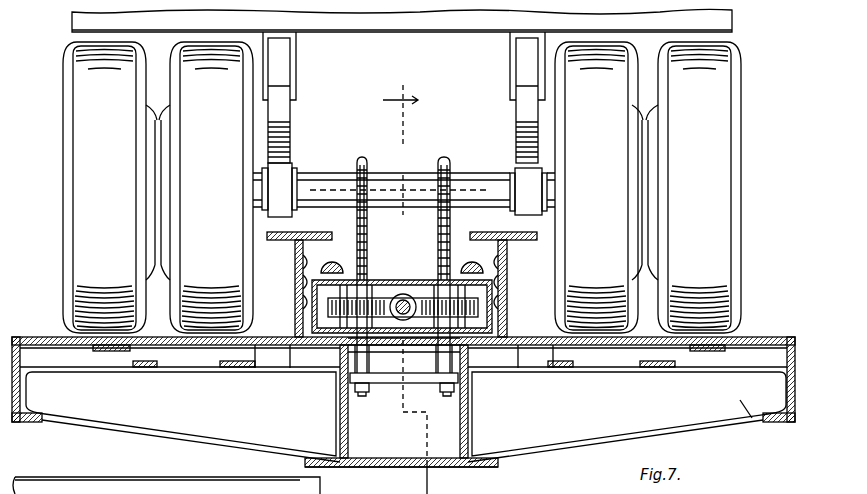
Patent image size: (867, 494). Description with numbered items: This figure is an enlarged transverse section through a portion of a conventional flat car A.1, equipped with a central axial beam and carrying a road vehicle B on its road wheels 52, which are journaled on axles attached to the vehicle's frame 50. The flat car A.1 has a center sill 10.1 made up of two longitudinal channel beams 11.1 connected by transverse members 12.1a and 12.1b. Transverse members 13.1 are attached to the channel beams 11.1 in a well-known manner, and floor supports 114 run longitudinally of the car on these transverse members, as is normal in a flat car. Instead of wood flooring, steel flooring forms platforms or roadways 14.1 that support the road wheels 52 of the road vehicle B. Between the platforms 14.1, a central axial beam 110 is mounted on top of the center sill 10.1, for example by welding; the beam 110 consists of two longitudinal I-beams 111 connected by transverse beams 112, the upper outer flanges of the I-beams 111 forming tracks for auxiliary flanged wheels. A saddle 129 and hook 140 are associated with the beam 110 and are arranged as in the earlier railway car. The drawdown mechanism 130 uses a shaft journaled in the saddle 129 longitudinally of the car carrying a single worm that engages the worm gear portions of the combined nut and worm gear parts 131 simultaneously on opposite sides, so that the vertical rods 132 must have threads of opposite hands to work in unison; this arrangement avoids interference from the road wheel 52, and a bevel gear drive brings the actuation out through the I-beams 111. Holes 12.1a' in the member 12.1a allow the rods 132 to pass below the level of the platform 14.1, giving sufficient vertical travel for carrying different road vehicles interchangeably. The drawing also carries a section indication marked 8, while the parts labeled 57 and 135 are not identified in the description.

The road vehicle B is at (718, 22).
The road wheels 52 is at (80, 287).
The frame 50 is at (297, 70).
The axle 57 is at (479, 174).
The section line 8- 8 is at (405, 281).
The hook 140 is at (443, 159).
The vertical rods 132 is at (437, 214).
The combined nut and worm gear parts 131 is at (443, 292).
The longitudinal I-beams 111 is at (277, 241).
The transverse beams 112 is at (413, 271).
The saddle 129 is at (490, 322).
The drawdown mechanism 130 is at (426, 335).
The clamp plate 135 is at (390, 383).
The platforms or roadways 14.1 is at (762, 336).
The longitudinal channel beams 11.1 is at (460, 443).
The center sill 10.1 is at (476, 474).
The transverse member 12.1b is at (425, 468).
The transverse member 12.1a is at (404, 384).
The holes 12.1a' is at (157, 487).
The floor supports 114 is at (250, 355).
The central axial beam 110 is at (296, 348).
The transverse members 13.1 is at (200, 413).
The flat car A.1 is at (745, 405).